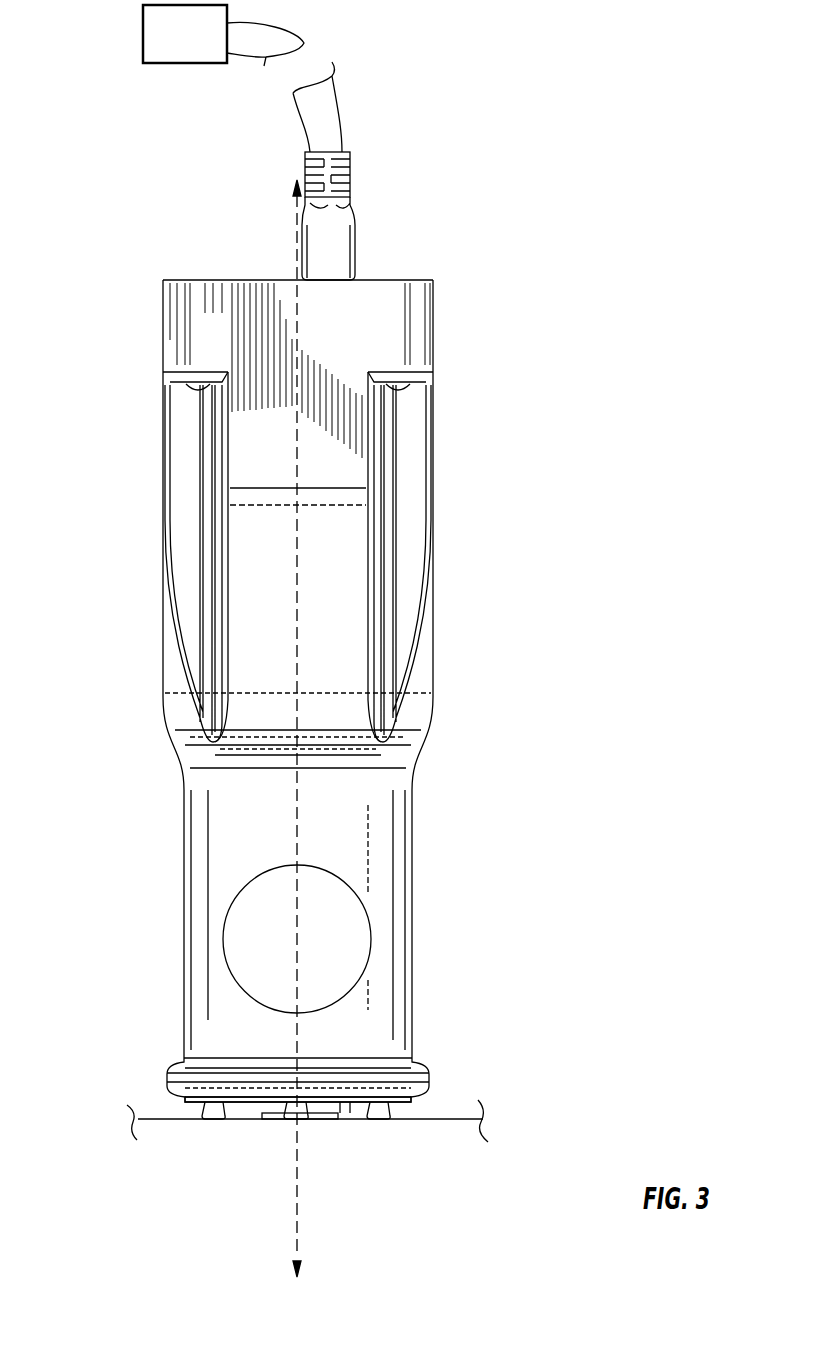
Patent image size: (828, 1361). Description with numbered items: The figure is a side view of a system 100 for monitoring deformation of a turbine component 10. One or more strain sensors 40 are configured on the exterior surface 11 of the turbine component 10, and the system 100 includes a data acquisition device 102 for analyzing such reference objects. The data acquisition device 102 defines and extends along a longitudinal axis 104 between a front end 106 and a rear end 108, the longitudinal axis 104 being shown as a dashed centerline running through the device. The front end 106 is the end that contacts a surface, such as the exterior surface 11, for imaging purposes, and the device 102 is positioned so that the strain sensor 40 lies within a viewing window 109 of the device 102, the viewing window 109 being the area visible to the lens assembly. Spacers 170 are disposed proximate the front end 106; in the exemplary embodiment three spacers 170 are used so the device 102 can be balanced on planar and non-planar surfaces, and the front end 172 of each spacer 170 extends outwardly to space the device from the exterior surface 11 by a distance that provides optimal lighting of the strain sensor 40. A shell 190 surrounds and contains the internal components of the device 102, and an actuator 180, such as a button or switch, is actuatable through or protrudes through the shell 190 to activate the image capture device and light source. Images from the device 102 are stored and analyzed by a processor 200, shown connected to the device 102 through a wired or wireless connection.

The processor 200 is at (200, 47).
The system 100 is at (323, 669).
The longitudinal axis 104 is at (296, 251).
The rear end 108 is at (175, 268).
The data acquisition device 102 is at (442, 541).
The shell 190 is at (422, 663).
The actuator 180 is at (313, 946).
The front end 106 is at (175, 1101).
The spacer 170 is at (398, 1107).
The front end of spacer 172 is at (389, 1122).
The viewing window 109 is at (358, 1109).
The strain sensor 40 is at (270, 1120).
The exterior surface 11 is at (462, 1118).
The turbine component 10 is at (462, 1128).